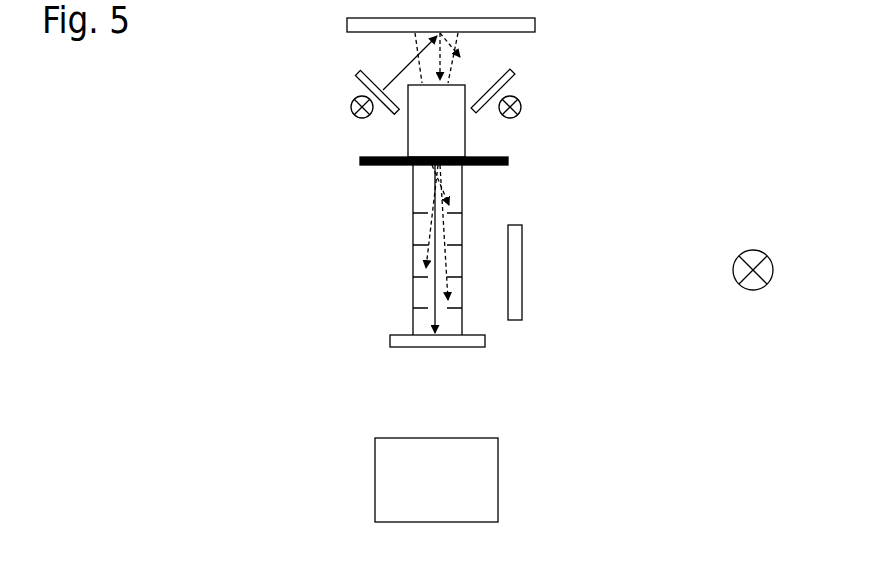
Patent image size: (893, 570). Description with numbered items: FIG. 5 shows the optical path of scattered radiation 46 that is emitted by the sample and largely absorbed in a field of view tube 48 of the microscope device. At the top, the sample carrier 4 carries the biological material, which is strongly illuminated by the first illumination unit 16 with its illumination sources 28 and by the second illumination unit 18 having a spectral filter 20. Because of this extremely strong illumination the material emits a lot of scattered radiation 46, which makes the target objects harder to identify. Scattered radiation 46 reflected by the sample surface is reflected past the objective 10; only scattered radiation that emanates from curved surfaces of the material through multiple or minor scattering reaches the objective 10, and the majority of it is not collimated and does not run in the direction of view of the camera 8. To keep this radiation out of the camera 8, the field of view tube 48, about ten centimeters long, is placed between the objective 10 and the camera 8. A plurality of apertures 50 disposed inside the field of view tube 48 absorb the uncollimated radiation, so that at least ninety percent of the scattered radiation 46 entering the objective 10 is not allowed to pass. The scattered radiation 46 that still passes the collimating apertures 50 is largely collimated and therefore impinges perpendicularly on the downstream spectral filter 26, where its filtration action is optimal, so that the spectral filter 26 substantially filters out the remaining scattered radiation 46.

The sample carrier 4 is at (535, 25).
The camera 8 is at (492, 482).
The objective 10 is at (412, 136).
The first illumination unit 16 is at (345, 78).
The second illumination unit 18 is at (753, 290).
The spectral filter 20 is at (518, 298).
The spectral filter 26 is at (473, 345).
The illumination source 28 is at (350, 104).
The scattered radiation 46 is at (458, 42).
The field of view tube 48 is at (463, 187).
The apertures 50 is at (418, 215).